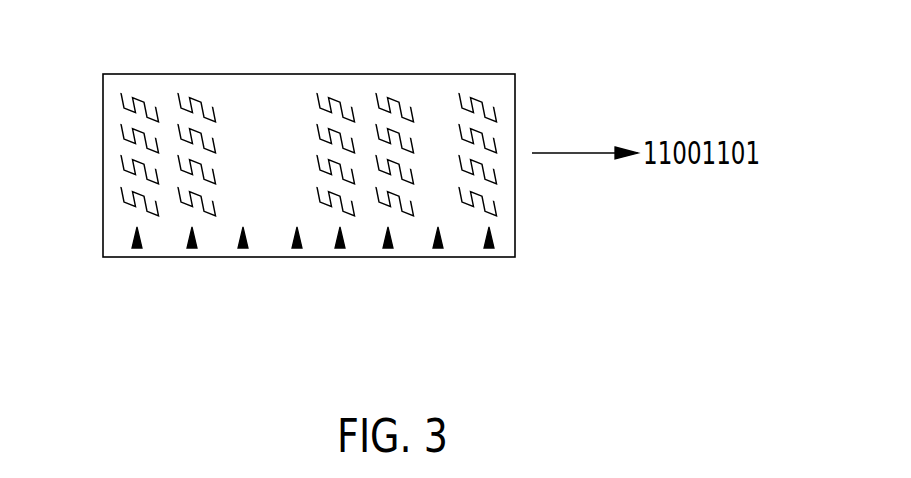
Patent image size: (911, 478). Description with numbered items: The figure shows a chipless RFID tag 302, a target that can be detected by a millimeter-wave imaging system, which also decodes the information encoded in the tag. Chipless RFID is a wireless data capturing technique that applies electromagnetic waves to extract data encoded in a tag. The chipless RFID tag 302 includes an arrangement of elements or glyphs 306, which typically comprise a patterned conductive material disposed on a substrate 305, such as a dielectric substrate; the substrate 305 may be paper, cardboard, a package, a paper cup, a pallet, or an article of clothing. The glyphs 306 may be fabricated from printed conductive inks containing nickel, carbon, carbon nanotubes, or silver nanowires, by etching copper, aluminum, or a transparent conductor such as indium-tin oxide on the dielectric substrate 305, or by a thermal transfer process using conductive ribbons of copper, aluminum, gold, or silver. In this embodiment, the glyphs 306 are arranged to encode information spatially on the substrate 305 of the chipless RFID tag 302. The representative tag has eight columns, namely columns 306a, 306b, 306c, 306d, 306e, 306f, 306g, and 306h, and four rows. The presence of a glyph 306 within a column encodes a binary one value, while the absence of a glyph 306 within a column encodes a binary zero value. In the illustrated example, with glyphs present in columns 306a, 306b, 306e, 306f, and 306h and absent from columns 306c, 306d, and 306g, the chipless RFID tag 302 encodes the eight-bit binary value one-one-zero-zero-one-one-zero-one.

The chipless RFID tag 302 is at (440, 73).
The substrate 305 is at (233, 82).
The glyphs 306 is at (141, 96).
The first column 306a is at (137, 248).
The second column 306b is at (192, 248).
The third column 306c is at (243, 248).
The fourth column 306d is at (297, 248).
The fifth column 306e is at (340, 248).
The sixth column 306f is at (388, 248).
The seventh column 306g is at (438, 248).
The eighth column 306h is at (489, 248).